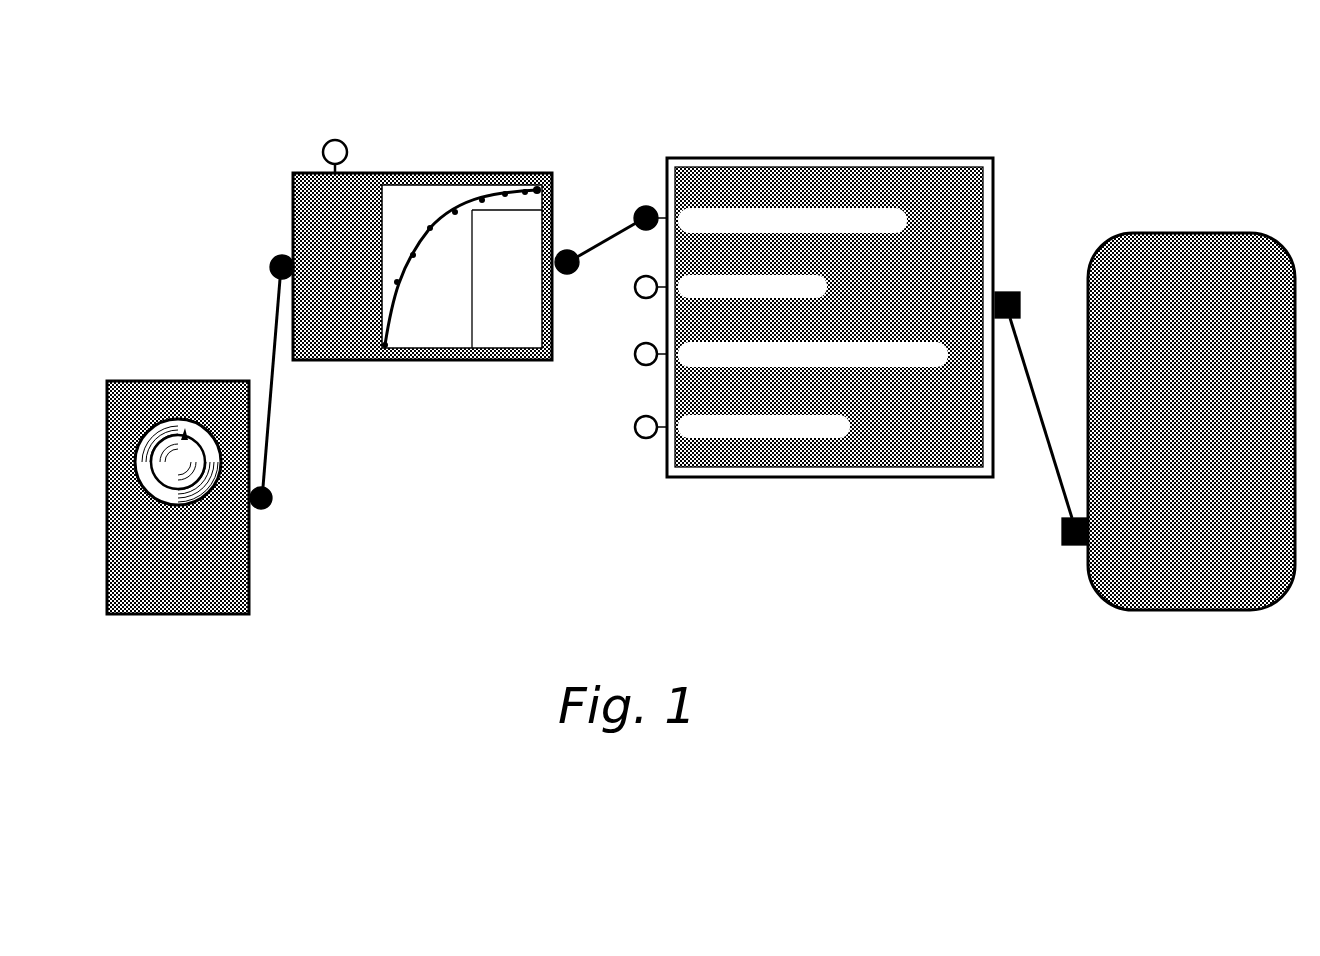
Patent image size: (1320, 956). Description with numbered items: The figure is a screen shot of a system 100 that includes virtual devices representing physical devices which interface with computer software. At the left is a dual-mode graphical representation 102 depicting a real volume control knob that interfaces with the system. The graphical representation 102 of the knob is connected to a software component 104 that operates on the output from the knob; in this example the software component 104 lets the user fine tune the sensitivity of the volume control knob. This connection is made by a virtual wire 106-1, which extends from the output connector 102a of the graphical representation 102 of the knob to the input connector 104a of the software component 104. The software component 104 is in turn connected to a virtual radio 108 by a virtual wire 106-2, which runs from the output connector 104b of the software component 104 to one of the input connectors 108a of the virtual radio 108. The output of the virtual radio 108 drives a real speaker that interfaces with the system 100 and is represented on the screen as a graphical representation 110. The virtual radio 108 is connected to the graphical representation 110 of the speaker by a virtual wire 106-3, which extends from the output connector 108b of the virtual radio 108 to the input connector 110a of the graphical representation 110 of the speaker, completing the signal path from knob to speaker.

The system 100 is at (1030, 103).
The dual-mode graphical representation 102 is at (178, 380).
The output connector 102a is at (273, 502).
The software component 104 is at (370, 173).
The input connector 104a is at (272, 264).
The output connector 104b is at (568, 275).
The virtual wire 106-1 is at (273, 415).
The virtual wire 106-2 is at (600, 240).
The virtual wire 106-3 is at (1045, 435).
The virtual radio 108 is at (830, 158).
The input connectors 108a is at (644, 206).
The output connector 108b is at (1007, 292).
The graphical representation 110 is at (1210, 232).
The input connector 110a is at (1072, 548).